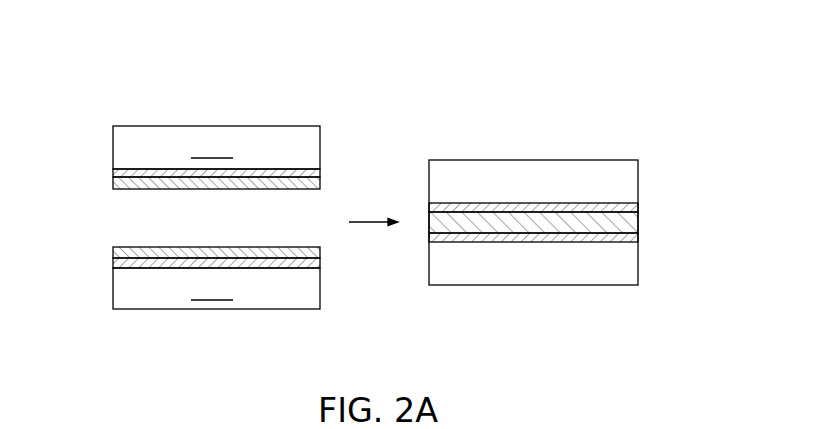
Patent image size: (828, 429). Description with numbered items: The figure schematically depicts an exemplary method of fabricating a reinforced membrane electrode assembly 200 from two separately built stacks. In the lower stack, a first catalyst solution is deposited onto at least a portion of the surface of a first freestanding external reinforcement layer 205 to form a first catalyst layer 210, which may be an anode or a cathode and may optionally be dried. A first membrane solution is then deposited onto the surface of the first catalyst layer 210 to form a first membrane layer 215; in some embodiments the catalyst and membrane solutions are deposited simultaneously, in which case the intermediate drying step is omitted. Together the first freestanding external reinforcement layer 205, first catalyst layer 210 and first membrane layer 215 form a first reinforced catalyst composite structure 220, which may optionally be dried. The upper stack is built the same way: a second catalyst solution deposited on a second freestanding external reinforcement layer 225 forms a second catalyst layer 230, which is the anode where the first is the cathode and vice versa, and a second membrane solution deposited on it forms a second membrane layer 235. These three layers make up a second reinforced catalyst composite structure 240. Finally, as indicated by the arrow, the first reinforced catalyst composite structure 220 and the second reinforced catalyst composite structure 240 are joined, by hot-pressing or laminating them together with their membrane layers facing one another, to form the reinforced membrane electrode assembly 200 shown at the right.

The reinforced membrane electrode assembly 200 is at (652, 128).
The first freestanding external reinforcement layer 205 is at (216, 288).
The first catalyst layer 210 is at (312, 263).
The first membrane layer 215 is at (159, 247).
The first reinforced catalyst composite structure 220 is at (208, 231).
The second freestanding external reinforcement layer 225 is at (216, 147).
The second catalyst layer 230 is at (314, 173).
The second membrane layer 235 is at (237, 182).
The second reinforced catalyst composite structure 240 is at (207, 127).